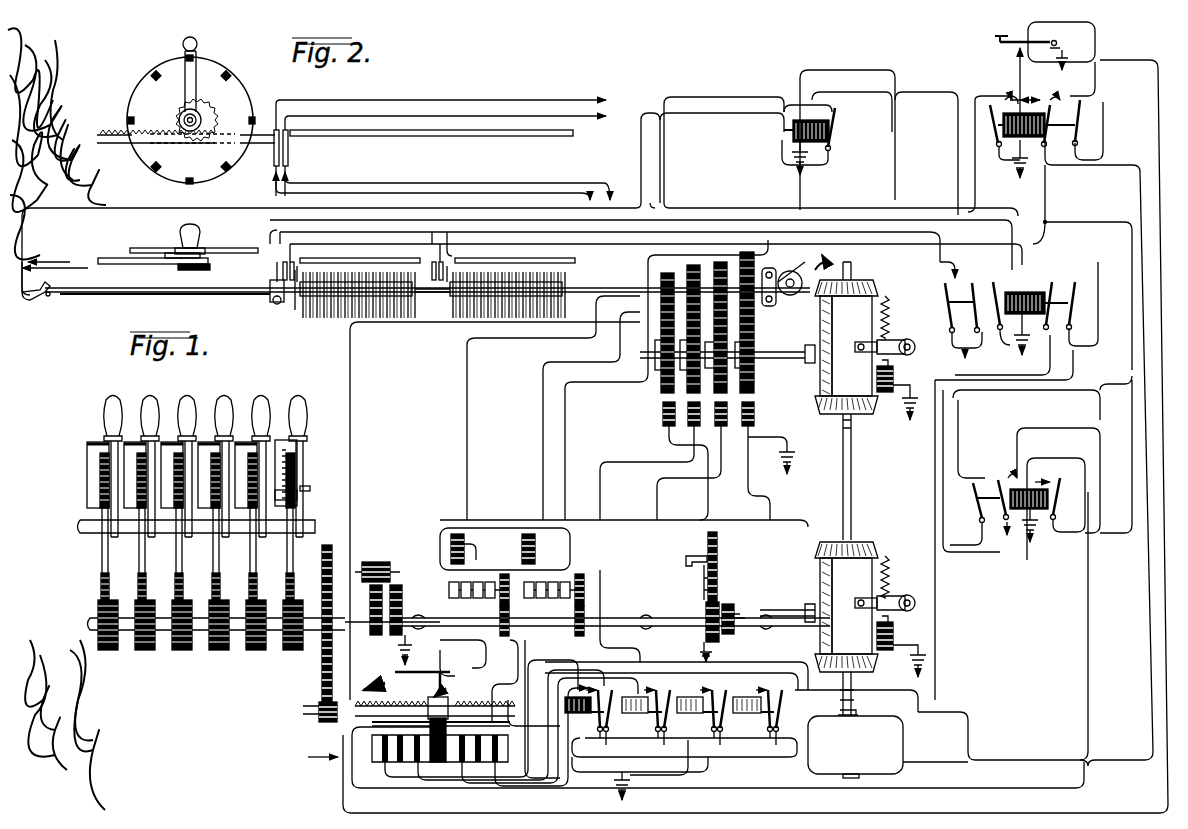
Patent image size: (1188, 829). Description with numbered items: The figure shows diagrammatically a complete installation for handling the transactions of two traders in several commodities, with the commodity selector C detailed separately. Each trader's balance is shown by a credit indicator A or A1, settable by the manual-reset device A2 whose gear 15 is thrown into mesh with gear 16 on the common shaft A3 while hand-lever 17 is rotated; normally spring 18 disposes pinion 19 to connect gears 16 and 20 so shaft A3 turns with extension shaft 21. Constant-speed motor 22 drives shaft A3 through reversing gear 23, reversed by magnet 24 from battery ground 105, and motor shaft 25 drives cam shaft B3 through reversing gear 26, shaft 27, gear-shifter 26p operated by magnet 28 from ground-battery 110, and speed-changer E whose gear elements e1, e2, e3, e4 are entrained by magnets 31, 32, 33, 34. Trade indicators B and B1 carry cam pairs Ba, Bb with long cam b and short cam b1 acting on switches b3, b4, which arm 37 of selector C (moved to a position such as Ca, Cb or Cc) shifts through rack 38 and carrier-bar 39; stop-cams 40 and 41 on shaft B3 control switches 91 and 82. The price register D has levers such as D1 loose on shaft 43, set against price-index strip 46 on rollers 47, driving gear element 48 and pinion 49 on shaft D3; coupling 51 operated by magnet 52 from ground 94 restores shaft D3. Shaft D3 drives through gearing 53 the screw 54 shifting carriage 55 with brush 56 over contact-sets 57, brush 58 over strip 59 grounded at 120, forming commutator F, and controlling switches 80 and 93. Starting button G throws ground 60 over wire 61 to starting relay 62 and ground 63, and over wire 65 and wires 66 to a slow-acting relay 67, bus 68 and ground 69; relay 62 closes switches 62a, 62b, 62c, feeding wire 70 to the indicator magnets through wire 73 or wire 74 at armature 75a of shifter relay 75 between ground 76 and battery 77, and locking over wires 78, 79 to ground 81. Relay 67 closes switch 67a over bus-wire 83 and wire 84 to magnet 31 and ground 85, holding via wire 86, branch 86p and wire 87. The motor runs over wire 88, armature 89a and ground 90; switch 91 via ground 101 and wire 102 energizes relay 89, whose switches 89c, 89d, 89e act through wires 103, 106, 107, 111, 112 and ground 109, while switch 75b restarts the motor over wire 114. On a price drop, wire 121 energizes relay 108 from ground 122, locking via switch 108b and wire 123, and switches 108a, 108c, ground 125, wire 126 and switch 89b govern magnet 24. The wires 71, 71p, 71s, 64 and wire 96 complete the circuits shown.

In FIG. 2, the commodity selector C is at (150, 68).
In FIG. 1, the commodity selector C is at (180, 248).
In FIG. 2, the selector position Ca is at (176, 103).
In FIG. 2, the pinion Cb is at (181, 118).
In FIG. 2, the rack extension Cc is at (163, 140).
In FIG. 2, the arm 37 is at (196, 82).
In FIG. 1, the arm 37 is at (200, 248).
In FIG. 2, the rack 38 is at (110, 128).
In FIG. 1, the rack 38 is at (110, 258).
In FIG. 2, the carrier-bar 39 is at (375, 138).
In FIG. 1, the carrier-bar 39 is at (400, 262).
In FIG. 2, the switch b3 is at (275, 166).
In FIG. 1, the switch b3 is at (275, 280).
In FIG. 2, the switch b4 is at (290, 166).
In FIG. 1, the switch b4 is at (290, 268).
In FIG. 2, the wire 73 is at (340, 108).
In FIG. 1, the wire 73 is at (272, 244).
In FIG. 2, the common wire 74 is at (405, 100).
In FIG. 1, the common wire 74 is at (608, 217).
In FIG. 2, the wire 71 is at (352, 193).
In FIG. 1, the wire 71 is at (467, 462).
In FIG. 2, the wire 71' 71p is at (548, 186).
In FIG. 1, the wire 71 one 71s is at (542, 462).
In FIG. 1, the wire 102 is at (135, 212).
In FIG. 1, the wire 79 is at (350, 413).
In FIG. 1, the wire 70 is at (566, 448).
In FIG. 1, the switch 91 is at (32, 262).
In FIG. 1, the ground 101 is at (85, 268).
In FIG. 1, the stop-cam 40 is at (42, 295).
In FIG. 1, the trade indicator B is at (373, 300).
In FIG. 1, the trade indicator B1 is at (463, 300).
In FIG. 1, the pair of cams Ba is at (292, 298).
In FIG. 1, the pair of cams Bb is at (310, 298).
In FIG. 1, the shaft B3 is at (245, 292).
In FIG. 1, the cam b is at (265, 300).
In FIG. 1, the cam b1 is at (300, 268).
In FIG. 1, the price register D is at (232, 402).
In FIG. 1, the lever D1 is at (302, 470).
In FIG. 1, the shaft D3 is at (288, 410).
In FIG. 1, the price-index strip 46 is at (290, 445).
In FIG. 1, the rollers 47 is at (300, 490).
In FIG. 1, the shaft 43 is at (312, 522).
In FIG. 1, the gear element 48 is at (288, 556).
In FIG. 1, the pinion 49 is at (292, 645).
In FIG. 1, the coupling 51 is at (378, 560).
In FIG. 1, the magnet 52 is at (398, 580).
In FIG. 1, the ground-battery 94 is at (396, 654).
In FIG. 1, the accelerating gearing 53 is at (318, 698).
In FIG. 1, the screw 54 is at (305, 720).
In FIG. 1, the ground 81 is at (583, 476).
In FIG. 1, the carriage 55 is at (435, 708).
In FIG. 1, the switch 80 is at (422, 684).
In FIG. 1, the brush 58 is at (438, 723).
In FIG. 1, the contact strip 59 is at (500, 720).
In FIG. 1, the brush 56 is at (440, 740).
In FIG. 1, the contact-sets 57 is at (405, 775).
In FIG. 1, the commutator F is at (315, 755).
In FIG. 1, the wire 121 is at (350, 726).
In FIG. 1, the wire 65 is at (343, 806).
In FIG. 1, the wire 87 is at (1096, 50).
In FIG. 1, the ground 60 is at (1062, 50).
In FIG. 1, the starting button G is at (996, 45).
In FIG. 1, the wire 61 is at (1020, 78).
In FIG. 1, the starting relay 62 is at (1030, 135).
In FIG. 1, the armature switch 62a is at (1082, 102).
In FIG. 1, the armature switch 62b is at (1000, 98).
In FIG. 1, the armature switch 62c is at (1044, 112).
In FIG. 1, the battery ground 63 is at (1018, 170).
In FIG. 1, the wire 78 is at (1045, 204).
In FIG. 1, the shifter relay 75 is at (827, 150).
In FIG. 1, the armature-switch 75a is at (778, 100).
In FIG. 1, the switch 75b is at (840, 110).
In FIG. 1, the ground 76 is at (790, 170).
In FIG. 1, the battery 77 is at (790, 150).
In FIG. 1, the wire 112 is at (832, 70).
In FIG. 1, the wire 114 is at (932, 98).
In FIG. 1, the wire 111 is at (942, 288).
In FIG. 1, the switch 89e is at (940, 282).
In FIG. 1, the switch 89d is at (968, 282).
In FIG. 1, the second semi-cycle relay 89 is at (1040, 284).
In FIG. 1, the switch 89c is at (1005, 295).
In FIG. 1, the armature 89a is at (1063, 296).
In FIG. 1, the armature-switch 89b is at (1093, 301).
In FIG. 1, the battery ground 90 is at (1015, 334).
In FIG. 1, the ground 109 is at (968, 348).
In FIG. 1, the wire 88 is at (1050, 376).
In FIG. 1, the wire 103 is at (1110, 370).
In FIG. 1, the wire 106 is at (1003, 392).
In FIG. 1, the branch 107 is at (960, 428).
In FIG. 1, the wire 126 is at (1055, 430).
In FIG. 1, the relay 108 is at (1040, 540).
In FIG. 1, the switch 108a is at (973, 480).
In FIG. 1, the switch 108c is at (998, 490).
In FIG. 1, the switch 108b is at (1058, 482).
In FIG. 1, the wire 123 is at (1115, 540).
In FIG. 1, the ground 125 is at (990, 564).
In FIG. 1, the battery ground 122 is at (1023, 592).
In FIG. 1, the speed-changer E is at (750, 372).
In FIG. 1, the gear element e1 is at (675, 333).
In FIG. 1, the gear element e2 is at (700, 329).
In FIG. 1, the gear element e3 is at (728, 327).
In FIG. 1, the gear element e4 is at (725, 322).
In FIG. 1, the magnet 31 is at (665, 408).
In FIG. 1, the magnet 32 is at (693, 406).
In FIG. 1, the magnet 33 is at (720, 406).
In FIG. 1, the magnet 34 is at (752, 406).
In FIG. 1, the battery-ground 85 is at (792, 448).
In FIG. 1, the switch 82 is at (775, 266).
In FIG. 1, the stop-cam 41 is at (790, 298).
In FIG. 1, the shaft 27 is at (778, 356).
In FIG. 1, the reversing gear 26 is at (818, 392).
In FIG. 1, the gear-shifter 26p is at (898, 350).
In FIG. 1, the magnet 28 is at (893, 376).
In FIG. 1, the ground-battery 110 is at (905, 415).
In FIG. 1, the motor shaft 25 is at (853, 483).
In FIG. 1, the reversing gear 23 is at (820, 545).
In FIG. 1, the extension shaft 21 is at (806, 618).
In FIG. 1, the magnet 24 is at (893, 636).
In FIG. 1, the battery ground 105 is at (912, 660).
In FIG. 1, the constant-speed motor 22 is at (905, 748).
In FIG. 1, the common wire 86 is at (800, 700).
In FIG. 1, the branch 86p is at (972, 708).
In FIG. 1, the credit indicator A is at (465, 545).
In FIG. 1, the credit indicator A1 is at (535, 545).
In FIG. 1, the manual-reset device A2 is at (692, 567).
In FIG. 1, the shaft A3 is at (465, 545).
In FIG. 1, the hand-lever 17 is at (690, 558).
In FIG. 1, the gear 15 is at (718, 556).
In FIG. 1, the gear 16 is at (704, 606).
In FIG. 1, the gear 20 is at (725, 604).
In FIG. 1, the spring 18 is at (700, 647).
In FIG. 1, the pinion 19 is at (745, 647).
In FIG. 1, the wires 66 is at (548, 648).
In FIG. 1, the wire 84 is at (605, 632).
In FIG. 1, the wire 96 is at (478, 654).
In FIG. 1, the switch 93 is at (455, 675).
In FIG. 1, the ground 120 is at (505, 700).
In FIG. 1, the slow-acting relay 67 is at (578, 728).
In FIG. 1, the armature switch 67a is at (676, 717).
In FIG. 1, the common bus wire 68 is at (590, 750).
In FIG. 1, the battery ground 69 is at (615, 786).
In FIG. 1, the bus-wire 83 is at (660, 775).
In FIG. 1, the wire 64 is at (1094, 665).